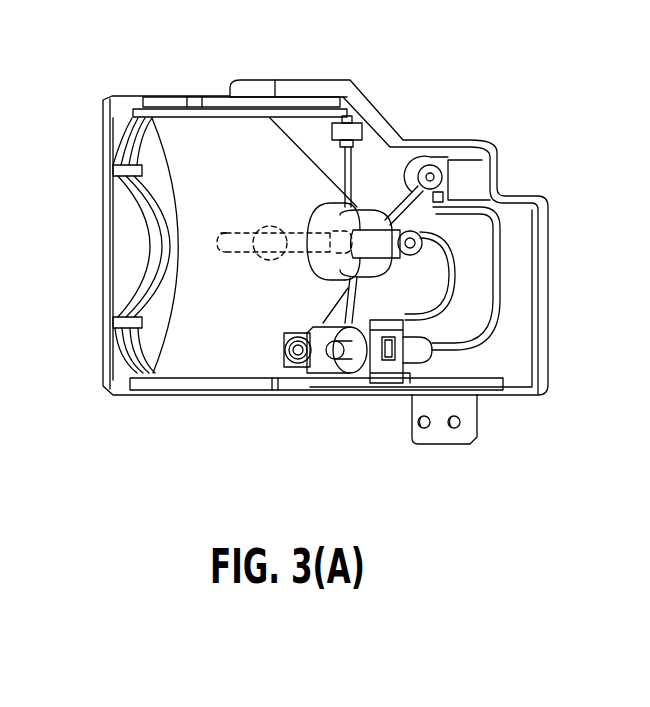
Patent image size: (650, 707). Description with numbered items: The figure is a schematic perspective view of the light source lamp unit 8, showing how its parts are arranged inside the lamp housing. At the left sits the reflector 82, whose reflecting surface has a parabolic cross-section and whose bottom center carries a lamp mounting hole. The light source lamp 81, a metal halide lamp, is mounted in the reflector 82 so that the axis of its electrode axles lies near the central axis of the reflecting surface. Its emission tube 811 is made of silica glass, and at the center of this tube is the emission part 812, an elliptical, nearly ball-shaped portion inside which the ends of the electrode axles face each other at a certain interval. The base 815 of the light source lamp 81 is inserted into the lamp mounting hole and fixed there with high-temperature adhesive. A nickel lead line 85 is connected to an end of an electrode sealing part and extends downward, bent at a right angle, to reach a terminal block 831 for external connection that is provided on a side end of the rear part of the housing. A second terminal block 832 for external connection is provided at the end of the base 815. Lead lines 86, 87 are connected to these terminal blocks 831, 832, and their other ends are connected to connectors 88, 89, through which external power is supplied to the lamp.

The light source lamp unit 8 is at (499, 70).
The reflector 82 is at (175, 157).
The light source lamp 81 is at (233, 254).
The emission tube 811 is at (243, 233).
The emission part 812 is at (272, 261).
The base 815 is at (382, 232).
The nickel lead line 85 is at (400, 200).
The terminal block 831 is at (434, 175).
The terminal block 832 is at (437, 217).
The lead line 87 is at (437, 285).
The lead line 86 is at (483, 325).
The connector 88 is at (345, 365).
The connector 89 is at (292, 367).